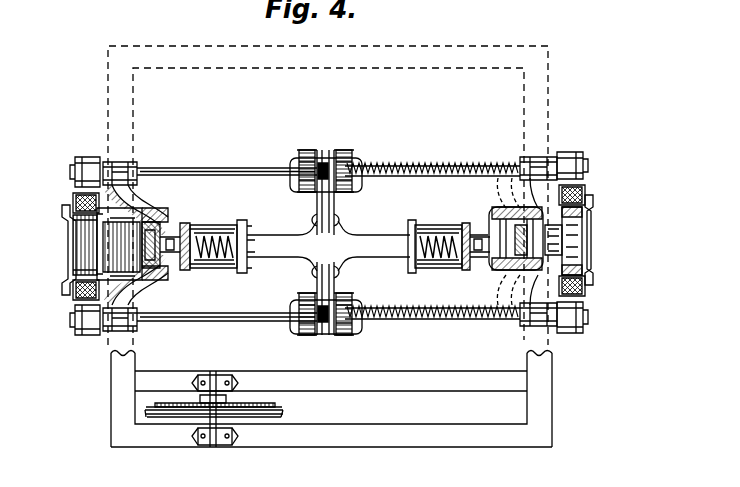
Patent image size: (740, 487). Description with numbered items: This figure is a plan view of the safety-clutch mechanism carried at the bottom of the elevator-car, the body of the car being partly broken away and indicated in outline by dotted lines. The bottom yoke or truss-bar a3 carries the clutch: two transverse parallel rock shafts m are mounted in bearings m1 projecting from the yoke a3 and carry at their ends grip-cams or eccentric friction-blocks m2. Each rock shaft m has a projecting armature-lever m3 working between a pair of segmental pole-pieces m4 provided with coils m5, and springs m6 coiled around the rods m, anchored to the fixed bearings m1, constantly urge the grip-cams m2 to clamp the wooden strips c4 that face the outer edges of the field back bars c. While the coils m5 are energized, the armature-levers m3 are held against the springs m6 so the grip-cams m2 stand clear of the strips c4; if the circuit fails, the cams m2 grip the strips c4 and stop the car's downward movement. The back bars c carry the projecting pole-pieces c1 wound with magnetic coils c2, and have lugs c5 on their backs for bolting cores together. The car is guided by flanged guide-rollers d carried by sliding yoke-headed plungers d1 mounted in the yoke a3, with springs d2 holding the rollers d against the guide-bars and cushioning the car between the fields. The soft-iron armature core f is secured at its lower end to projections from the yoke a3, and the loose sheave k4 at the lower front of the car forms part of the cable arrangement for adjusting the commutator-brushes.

The rock shafts m is at (232, 167).
The bearings m1 is at (128, 165).
The grip-cams m2 is at (76, 170).
The armature-lever m3 is at (300, 172).
The segmental pole-pieces m4 is at (318, 216).
The coils m5 is at (343, 150).
The springs m6 is at (440, 164).
The bottom yoke a3 is at (345, 243).
The guide-rollers d is at (100, 262).
The yoke-headed plungers d1 is at (176, 230).
The springs d2 is at (210, 226).
The armature core f is at (503, 210).
The back bar c is at (73, 240).
The pole-pieces c1 is at (583, 243).
The magnetic coils c2 is at (100, 245).
The wooden strips c4 is at (74, 200).
The lugs c5 is at (63, 210).
The loose sheave k4 is at (283, 412).